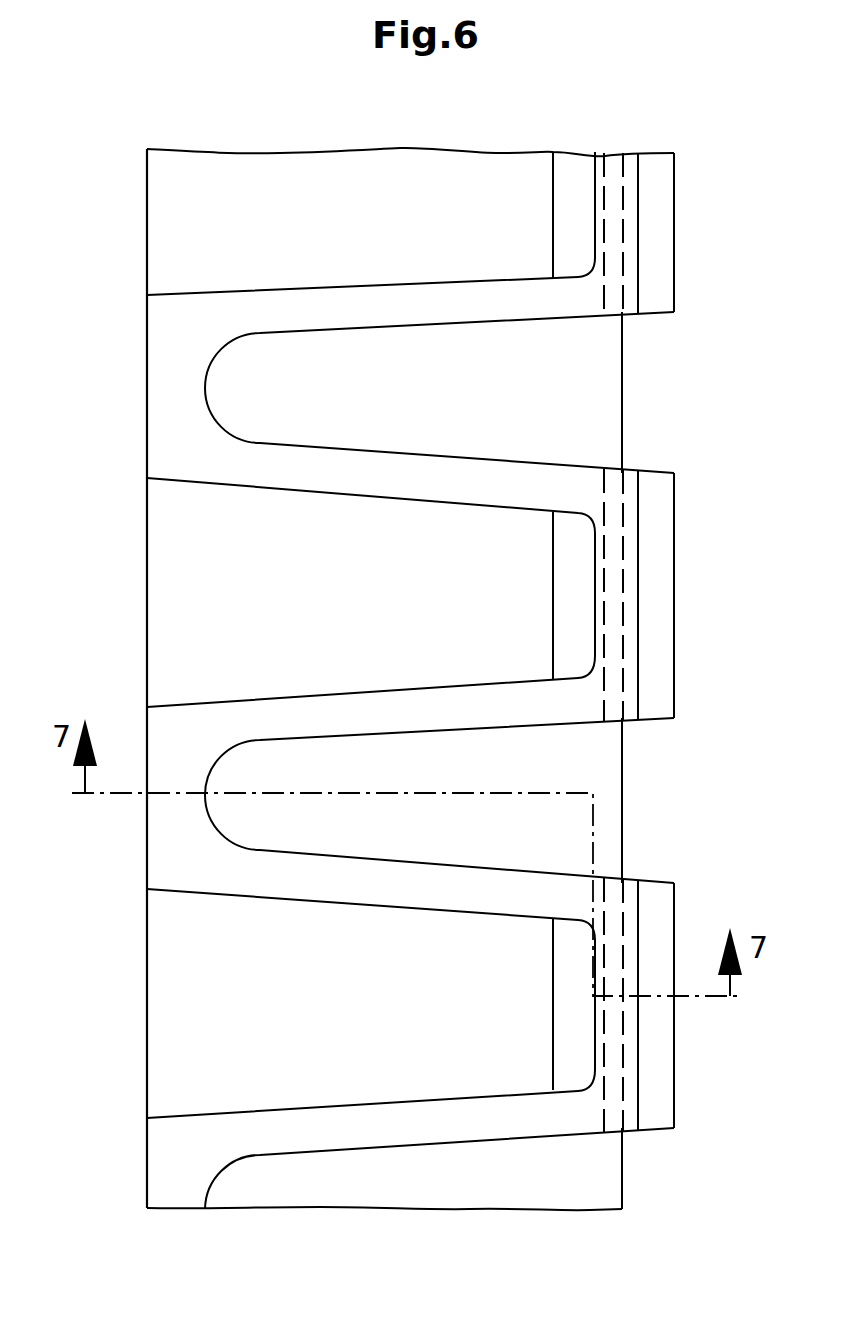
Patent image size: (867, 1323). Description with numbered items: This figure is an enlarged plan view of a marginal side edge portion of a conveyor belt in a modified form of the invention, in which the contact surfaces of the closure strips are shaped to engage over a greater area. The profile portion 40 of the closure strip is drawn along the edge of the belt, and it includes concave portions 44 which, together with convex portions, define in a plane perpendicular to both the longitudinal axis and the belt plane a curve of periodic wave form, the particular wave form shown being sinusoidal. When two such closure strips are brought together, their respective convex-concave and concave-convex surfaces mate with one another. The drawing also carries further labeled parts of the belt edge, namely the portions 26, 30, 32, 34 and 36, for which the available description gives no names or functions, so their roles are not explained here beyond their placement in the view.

The belt body 26 is at (76, 592).
The pitch line of mating member 30 is at (658, 390).
The teeth 32 is at (509, 437).
The tooth tip portion 34 is at (658, 473).
The tooth core recess 36 is at (568, 607).
The profile portion 40 is at (658, 262).
The concave portions 44 is at (604, 228).